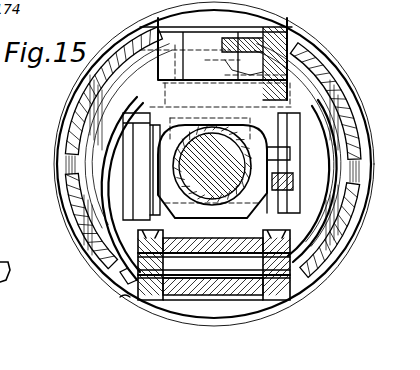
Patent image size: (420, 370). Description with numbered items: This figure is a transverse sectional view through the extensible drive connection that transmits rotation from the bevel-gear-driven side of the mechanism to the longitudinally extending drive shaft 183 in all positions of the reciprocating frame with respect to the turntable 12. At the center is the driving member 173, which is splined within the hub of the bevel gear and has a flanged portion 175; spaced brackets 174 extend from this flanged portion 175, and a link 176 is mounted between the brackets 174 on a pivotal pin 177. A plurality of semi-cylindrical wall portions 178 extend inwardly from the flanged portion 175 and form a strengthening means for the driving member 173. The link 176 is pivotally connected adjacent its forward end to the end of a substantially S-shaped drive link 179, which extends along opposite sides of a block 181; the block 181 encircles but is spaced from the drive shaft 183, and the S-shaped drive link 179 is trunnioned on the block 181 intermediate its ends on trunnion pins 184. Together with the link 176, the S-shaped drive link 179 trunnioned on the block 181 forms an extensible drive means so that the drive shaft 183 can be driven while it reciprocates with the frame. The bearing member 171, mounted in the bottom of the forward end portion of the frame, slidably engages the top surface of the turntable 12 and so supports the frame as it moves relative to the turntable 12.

The turntable 12 is at (348, 2).
The bearing member 171 is at (104, 12).
The driving member 173 is at (112, 268).
The brackets 174 is at (240, 302).
The flanged portion 175 is at (290, 302).
The link 176 is at (182, 216).
The pivotal pin 177 is at (146, 200).
The semi-cylindrical wall portions 178 is at (68, 183).
The S-shaped drive link 179 is at (140, 118).
The block 181 is at (236, 118).
The drive shaft 183 is at (243, 203).
The trunnion pins 184 is at (285, 163).